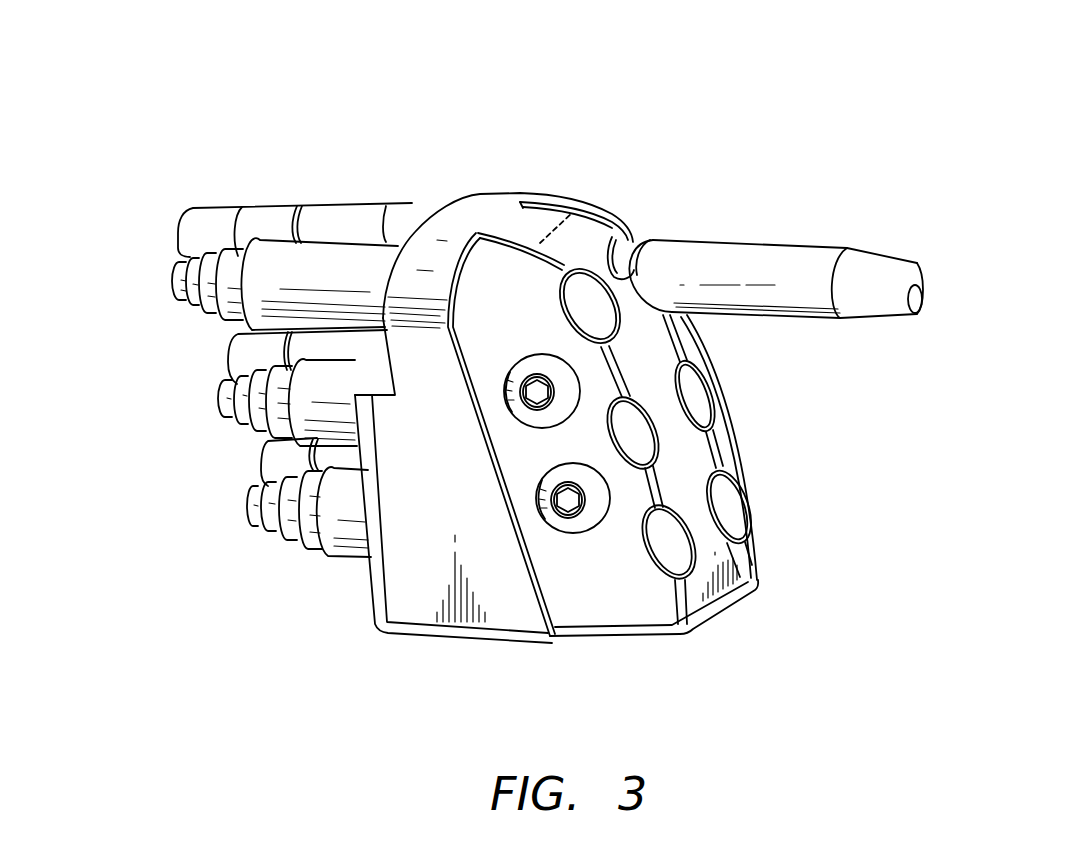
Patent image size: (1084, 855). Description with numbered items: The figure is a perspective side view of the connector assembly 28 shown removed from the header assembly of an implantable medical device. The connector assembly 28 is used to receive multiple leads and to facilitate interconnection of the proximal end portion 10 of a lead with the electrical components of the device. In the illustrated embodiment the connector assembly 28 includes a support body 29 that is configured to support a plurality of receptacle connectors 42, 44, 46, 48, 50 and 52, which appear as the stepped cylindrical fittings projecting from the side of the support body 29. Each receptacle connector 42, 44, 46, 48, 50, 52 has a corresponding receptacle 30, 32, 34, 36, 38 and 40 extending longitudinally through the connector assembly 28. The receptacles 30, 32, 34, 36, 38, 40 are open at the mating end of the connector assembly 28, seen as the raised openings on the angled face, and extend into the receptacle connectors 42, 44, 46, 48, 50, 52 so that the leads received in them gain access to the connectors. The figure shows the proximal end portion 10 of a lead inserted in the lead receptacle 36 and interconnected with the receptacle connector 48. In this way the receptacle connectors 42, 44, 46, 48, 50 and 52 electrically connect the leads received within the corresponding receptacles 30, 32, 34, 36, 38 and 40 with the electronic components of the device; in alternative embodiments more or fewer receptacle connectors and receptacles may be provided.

The connector assembly 28 is at (436, 118).
The support body 29 is at (493, 215).
The proximal end portion 10 is at (757, 248).
The receptacle 36 is at (616, 236).
The receptacle 30 is at (598, 310).
The receptacle 38 is at (703, 400).
The receptacle 32 is at (640, 437).
The receptacle 40 is at (730, 507).
The receptacle 34 is at (673, 557).
The receptacle connector 48 is at (195, 229).
The receptacle connector 42 is at (187, 280).
The receptacle connector 50 is at (243, 353).
The receptacle connector 44 is at (240, 402).
The receptacle connector 52 is at (267, 465).
The receptacle connector 46 is at (262, 516).